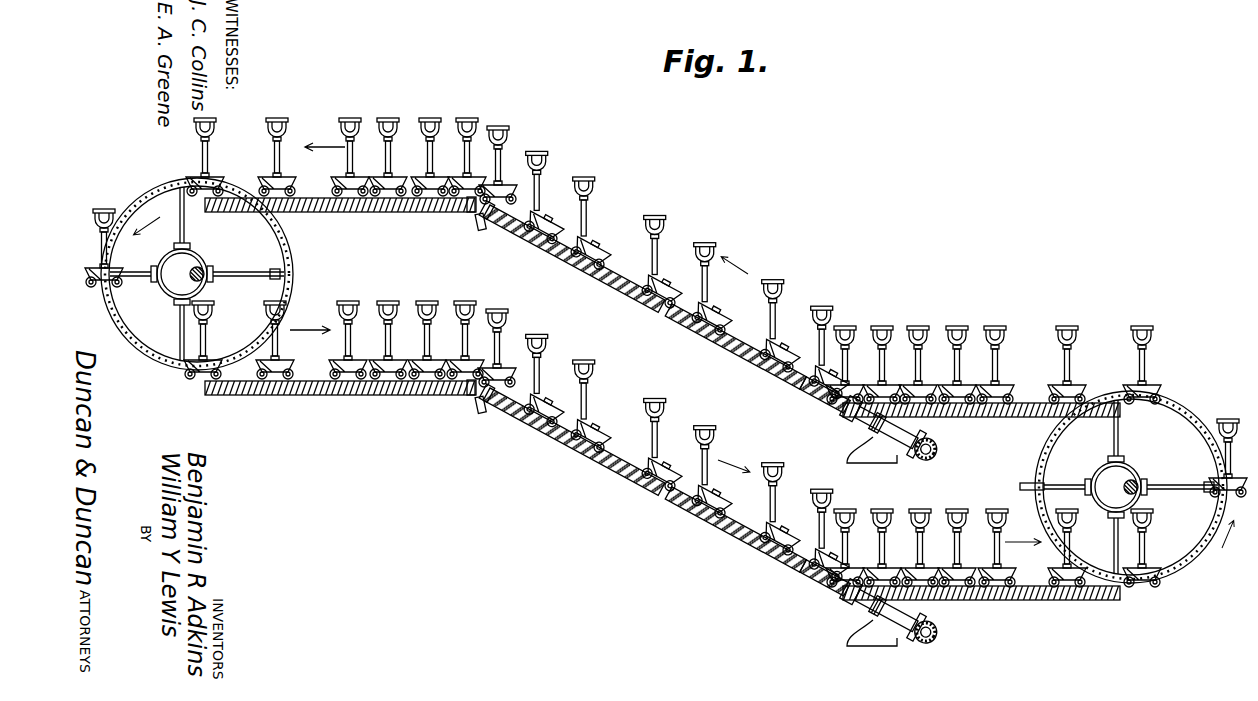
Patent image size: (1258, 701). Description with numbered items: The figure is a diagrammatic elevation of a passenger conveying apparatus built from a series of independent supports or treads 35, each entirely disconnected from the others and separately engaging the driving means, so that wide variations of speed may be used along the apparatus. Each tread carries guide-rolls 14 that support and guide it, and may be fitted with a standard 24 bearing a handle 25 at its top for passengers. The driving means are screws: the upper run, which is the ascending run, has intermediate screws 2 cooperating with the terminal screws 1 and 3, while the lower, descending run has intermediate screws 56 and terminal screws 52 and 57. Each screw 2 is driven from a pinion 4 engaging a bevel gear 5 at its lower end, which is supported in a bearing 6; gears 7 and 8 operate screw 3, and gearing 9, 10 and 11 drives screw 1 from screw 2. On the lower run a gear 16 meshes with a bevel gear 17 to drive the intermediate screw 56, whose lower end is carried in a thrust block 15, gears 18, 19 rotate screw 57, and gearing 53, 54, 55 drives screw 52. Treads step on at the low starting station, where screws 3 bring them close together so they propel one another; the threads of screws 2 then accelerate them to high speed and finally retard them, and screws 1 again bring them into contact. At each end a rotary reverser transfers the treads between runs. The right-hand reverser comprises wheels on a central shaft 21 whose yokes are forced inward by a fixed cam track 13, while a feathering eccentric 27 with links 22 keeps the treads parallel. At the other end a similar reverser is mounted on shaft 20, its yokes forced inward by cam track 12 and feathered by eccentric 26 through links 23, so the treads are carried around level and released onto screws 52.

The terminal screw 1 is at (382, 209).
The intermediate screw 2 is at (612, 289).
The terminal screw 3 is at (985, 418).
The pinion 4 is at (923, 460).
The bevel gear 5 is at (910, 456).
The bearing 6 is at (866, 458).
The gear 7 is at (853, 420).
The gear 8 is at (836, 410).
The gearing 9 is at (477, 224).
The gearing 10 is at (488, 224).
The gearing 11 is at (468, 214).
The cam track 12 is at (290, 245).
The cam track 13 is at (1192, 548).
The guide-roll 14 is at (283, 197).
The thrust block 15 is at (878, 644).
The gear 16 is at (920, 648).
The bevel gear 17 is at (922, 629).
The gear 18 is at (853, 605).
The gear 19 is at (836, 596).
The shaft 20 is at (207, 264).
The central shaft 21 is at (1139, 485).
The links 22 is at (1176, 487).
The links 23 is at (247, 280).
The standard 24 is at (655, 253).
The handle 25 is at (582, 173).
The eccentric 26 is at (170, 288).
The feathering eccentric 27 is at (1110, 498).
The tread 35 is at (424, 178).
The terminal screw 52 is at (302, 397).
The gearing 53 is at (478, 414).
The gearing 54 is at (470, 402).
The gearing 55 is at (491, 410).
The intermediate screw 56 is at (628, 481).
The terminal screw 57 is at (1010, 602).